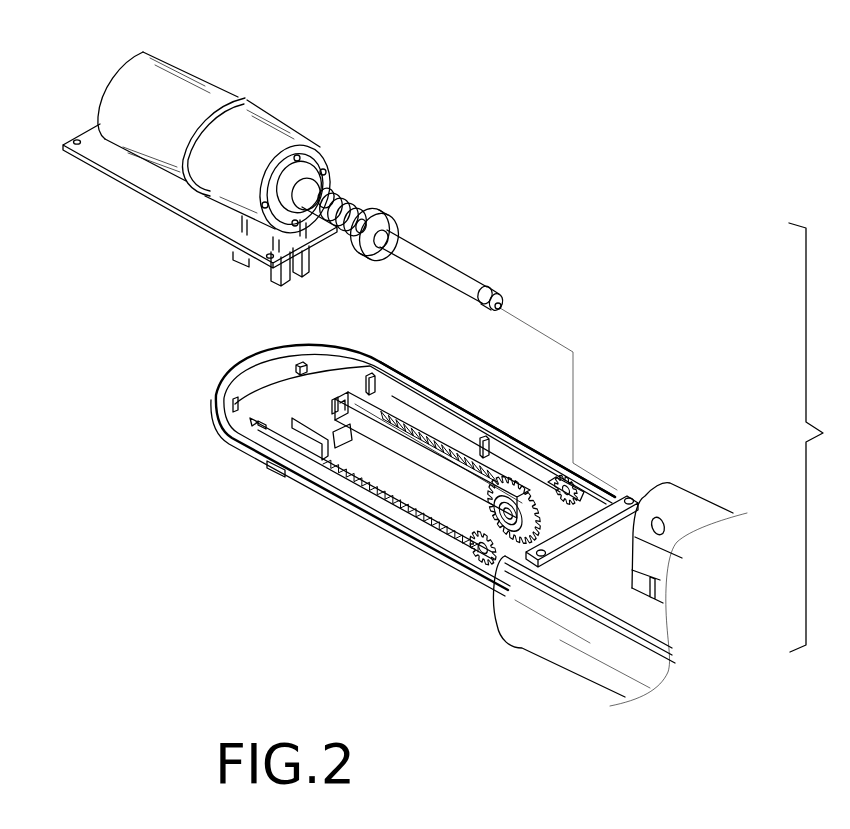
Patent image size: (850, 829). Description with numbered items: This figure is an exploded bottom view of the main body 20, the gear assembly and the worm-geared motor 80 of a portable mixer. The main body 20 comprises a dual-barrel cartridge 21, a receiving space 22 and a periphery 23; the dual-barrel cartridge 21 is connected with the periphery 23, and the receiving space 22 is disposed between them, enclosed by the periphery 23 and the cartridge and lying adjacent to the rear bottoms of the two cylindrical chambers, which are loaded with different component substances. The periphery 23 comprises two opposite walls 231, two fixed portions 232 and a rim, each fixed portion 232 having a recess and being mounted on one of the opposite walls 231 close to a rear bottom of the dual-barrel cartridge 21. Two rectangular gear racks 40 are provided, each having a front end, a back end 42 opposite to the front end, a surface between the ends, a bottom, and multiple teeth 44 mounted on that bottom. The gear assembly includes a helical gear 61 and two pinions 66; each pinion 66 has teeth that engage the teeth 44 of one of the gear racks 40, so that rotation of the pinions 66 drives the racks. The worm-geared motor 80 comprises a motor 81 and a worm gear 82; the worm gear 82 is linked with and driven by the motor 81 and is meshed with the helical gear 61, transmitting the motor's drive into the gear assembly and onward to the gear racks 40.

The main body 20 is at (177, 509).
The dual-barrel cartridge 21 is at (590, 672).
The receiving space 22 is at (297, 405).
The periphery 23 is at (474, 412).
The opposite walls 231 is at (260, 430).
The fixed portions 232 is at (594, 497).
The gear racks 40 is at (427, 469).
The back end 42 is at (331, 405).
The teeth 44 is at (416, 387).
The helical gear 61 is at (482, 549).
The pinions 66 is at (565, 485).
The worm-geared motor 80 is at (326, 132).
The motor 81 is at (210, 83).
The worm gear 82 is at (350, 200).